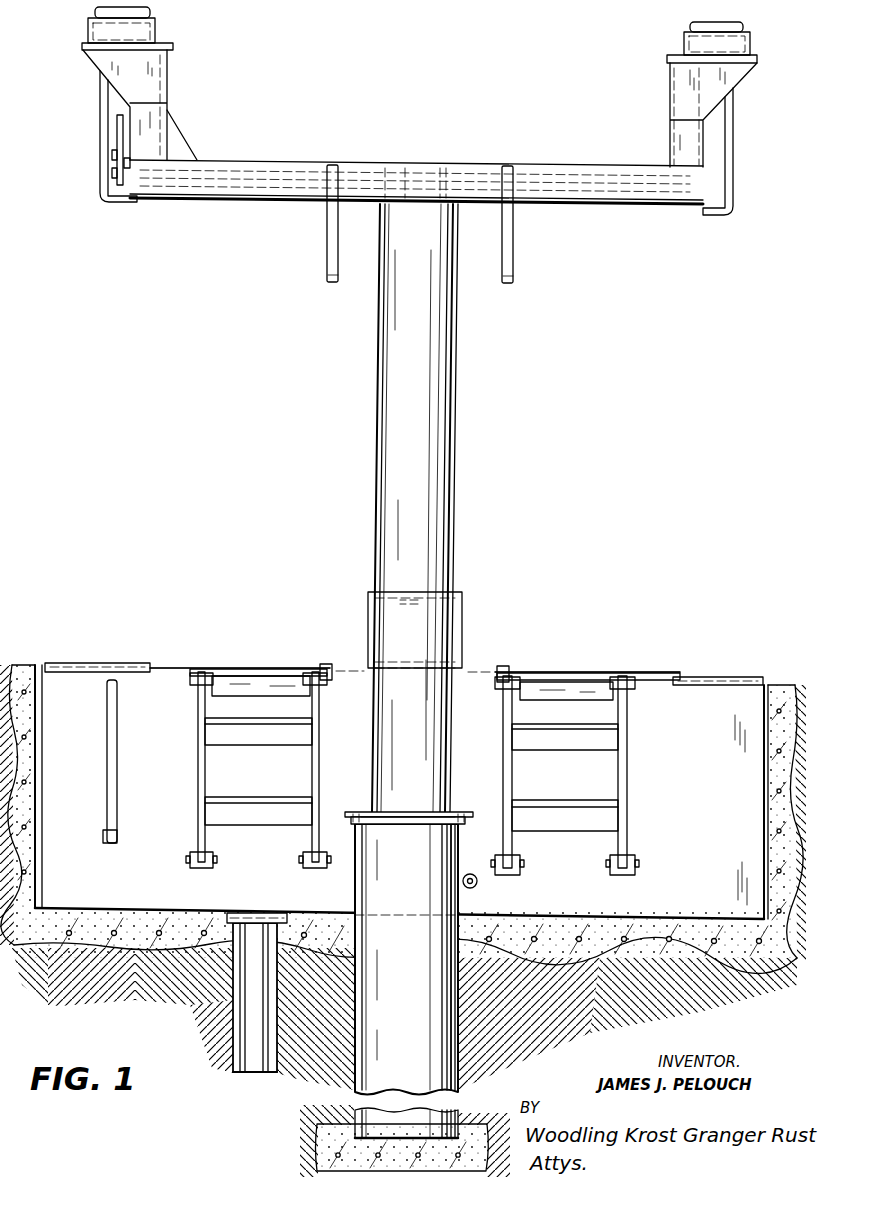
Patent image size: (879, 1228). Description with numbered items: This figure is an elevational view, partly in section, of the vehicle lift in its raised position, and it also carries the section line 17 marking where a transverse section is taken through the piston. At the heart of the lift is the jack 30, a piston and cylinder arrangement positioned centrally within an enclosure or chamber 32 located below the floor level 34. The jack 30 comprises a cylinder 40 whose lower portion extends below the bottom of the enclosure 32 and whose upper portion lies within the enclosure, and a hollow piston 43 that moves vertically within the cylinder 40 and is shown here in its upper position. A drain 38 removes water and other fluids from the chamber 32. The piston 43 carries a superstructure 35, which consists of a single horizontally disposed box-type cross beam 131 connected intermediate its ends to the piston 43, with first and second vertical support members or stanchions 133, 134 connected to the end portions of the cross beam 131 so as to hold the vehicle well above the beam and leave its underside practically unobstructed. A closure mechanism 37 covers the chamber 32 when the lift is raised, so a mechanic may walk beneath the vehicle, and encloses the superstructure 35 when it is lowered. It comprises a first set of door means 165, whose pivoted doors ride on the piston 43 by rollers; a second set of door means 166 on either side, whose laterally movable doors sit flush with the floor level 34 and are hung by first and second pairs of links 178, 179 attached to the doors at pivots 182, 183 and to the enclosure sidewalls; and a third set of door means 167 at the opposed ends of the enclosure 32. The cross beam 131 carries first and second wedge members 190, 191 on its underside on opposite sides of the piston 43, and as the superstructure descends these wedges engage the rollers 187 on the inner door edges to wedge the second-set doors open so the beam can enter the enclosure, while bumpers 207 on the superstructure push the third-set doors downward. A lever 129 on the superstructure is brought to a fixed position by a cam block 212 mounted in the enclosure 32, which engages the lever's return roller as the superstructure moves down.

The section line 17 is at (443, 732).
The jack 30 is at (470, 902).
The enclosure or chamber 32 is at (703, 737).
The floor level 34 is at (15, 665).
The superstructure 35 is at (668, 253).
The closure mechanism 37 is at (565, 653).
The drain 38 is at (237, 912).
The cylinder 40 is at (355, 884).
The piston 43 is at (455, 478).
The lever 129 is at (117, 138).
The cross beam 131 is at (525, 162).
The first vertical support member or stanchion 133 is at (170, 102).
The second vertical support member or stanchion 134 is at (670, 110).
The first set of door means 165 is at (358, 637).
The second set of door means 166 is at (248, 642).
The third set of door means 167 is at (86, 626).
The first pair of links 178 is at (198, 772).
The second pair of links 179 is at (318, 770).
The pivot 182 is at (600, 688).
The pivot 183 is at (608, 862).
The roller 187 is at (328, 663).
The first wedge member 190 is at (327, 248).
The second wedge member 191 is at (513, 253).
The bumper 207 is at (100, 165).
The cam block 212 is at (107, 775).